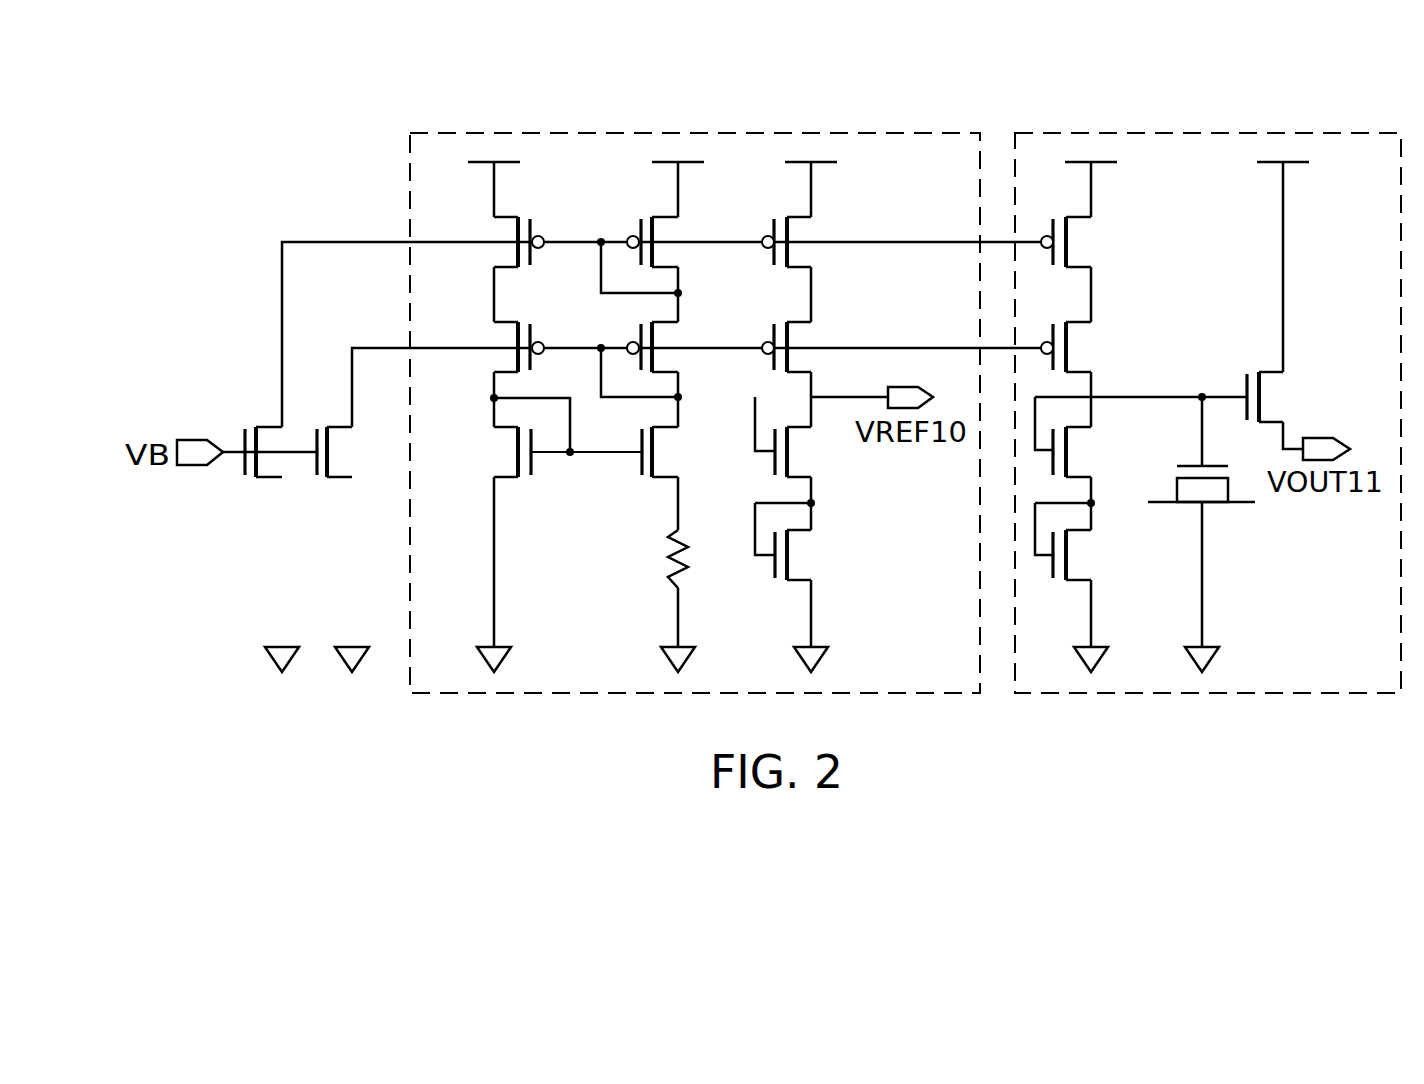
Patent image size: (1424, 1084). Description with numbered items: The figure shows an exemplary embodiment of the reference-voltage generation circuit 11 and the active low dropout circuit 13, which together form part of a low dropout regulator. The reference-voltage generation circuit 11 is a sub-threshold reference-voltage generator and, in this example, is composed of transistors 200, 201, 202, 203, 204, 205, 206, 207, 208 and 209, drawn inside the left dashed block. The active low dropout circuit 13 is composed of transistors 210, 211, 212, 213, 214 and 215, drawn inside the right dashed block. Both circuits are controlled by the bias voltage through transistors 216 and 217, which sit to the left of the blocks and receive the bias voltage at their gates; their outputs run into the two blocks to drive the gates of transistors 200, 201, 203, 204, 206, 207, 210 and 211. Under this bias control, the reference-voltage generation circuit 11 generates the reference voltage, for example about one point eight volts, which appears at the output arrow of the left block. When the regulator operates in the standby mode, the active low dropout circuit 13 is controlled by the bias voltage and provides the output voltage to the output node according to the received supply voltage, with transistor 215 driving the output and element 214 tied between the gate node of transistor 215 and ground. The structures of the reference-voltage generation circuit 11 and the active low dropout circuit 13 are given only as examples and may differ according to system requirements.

The reference-voltage generation circuit 11 is at (692, 130).
The active low dropout circuit 13 is at (1205, 130).
The transistor 200 is at (507, 230).
The transistor 201 is at (507, 335).
The transistor 202 is at (507, 452).
The transistor 203 is at (667, 230).
The transistor 204 is at (667, 335).
The transistor 205 is at (667, 450).
The transistor 206 is at (798, 230).
The transistor 207 is at (798, 335).
The transistor 208 is at (800, 450).
The transistor 209 is at (800, 555).
The transistor 210 is at (1082, 243).
The transistor 211 is at (1082, 349).
The transistor 212 is at (1082, 451).
The transistor 213 is at (1082, 556).
The transistor 214 is at (1217, 503).
The transistor 215 is at (1272, 398).
The transistor 216 is at (267, 425).
The transistor 217 is at (338, 425).